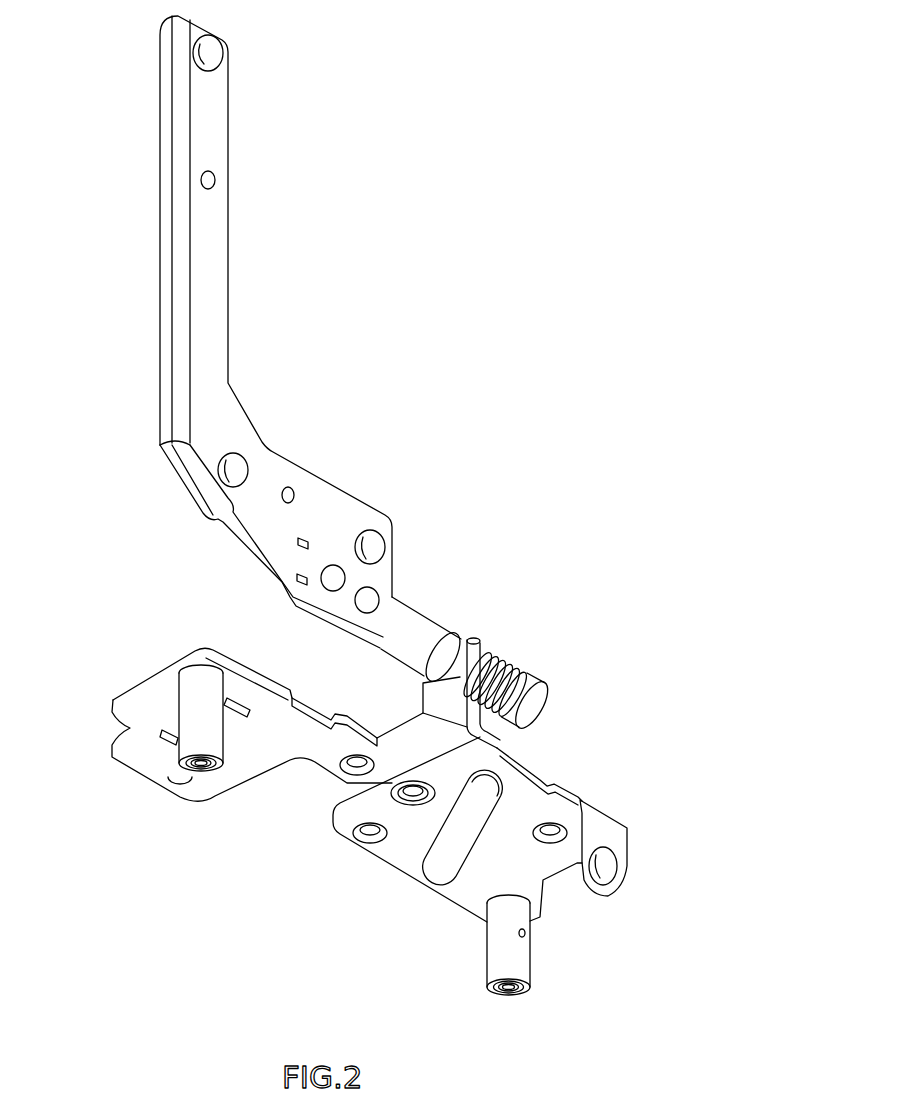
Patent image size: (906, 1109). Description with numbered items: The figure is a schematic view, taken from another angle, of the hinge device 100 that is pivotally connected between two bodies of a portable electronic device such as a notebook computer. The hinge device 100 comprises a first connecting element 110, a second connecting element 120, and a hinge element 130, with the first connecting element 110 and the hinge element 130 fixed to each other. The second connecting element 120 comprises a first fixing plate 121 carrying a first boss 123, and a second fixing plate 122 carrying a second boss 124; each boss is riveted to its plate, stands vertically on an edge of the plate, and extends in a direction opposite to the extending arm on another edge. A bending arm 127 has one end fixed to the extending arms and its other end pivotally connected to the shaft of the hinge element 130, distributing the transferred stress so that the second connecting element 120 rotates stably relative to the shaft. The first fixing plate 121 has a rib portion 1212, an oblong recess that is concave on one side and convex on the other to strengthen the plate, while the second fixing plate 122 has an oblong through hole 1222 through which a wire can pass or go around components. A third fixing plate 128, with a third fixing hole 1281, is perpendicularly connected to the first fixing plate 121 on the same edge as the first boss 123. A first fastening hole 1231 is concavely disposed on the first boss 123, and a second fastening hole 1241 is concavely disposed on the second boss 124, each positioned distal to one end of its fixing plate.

The hinge device 100 is at (707, 88).
The first connecting element 110 is at (332, 508).
The second connecting element 120 is at (636, 757).
The first fixing plate 121 is at (393, 857).
The rib portion 1212 is at (440, 863).
The second fixing plate 122 is at (147, 702).
The through hole 1222 is at (130, 738).
The first boss 123 is at (493, 942).
The first fastening hole 1231 is at (510, 988).
The second boss 124 is at (177, 747).
The second fastening hole 1241 is at (200, 768).
The bending arm 127 is at (430, 665).
The third fixing plate 128 is at (617, 838).
The third fixing hole 1281 is at (613, 873).
The hinge element 130 is at (497, 660).